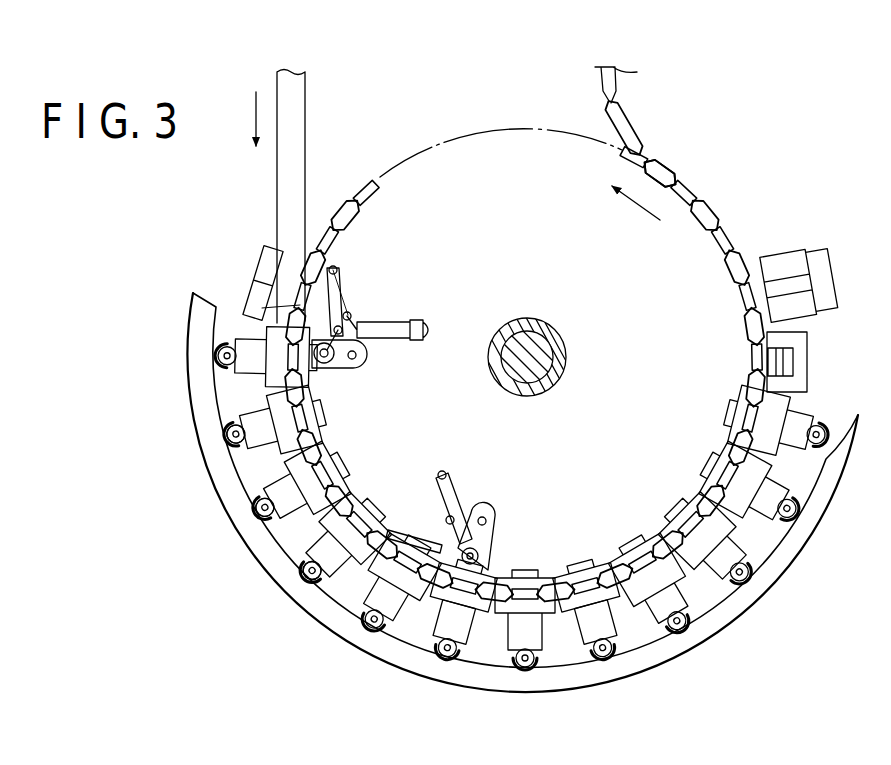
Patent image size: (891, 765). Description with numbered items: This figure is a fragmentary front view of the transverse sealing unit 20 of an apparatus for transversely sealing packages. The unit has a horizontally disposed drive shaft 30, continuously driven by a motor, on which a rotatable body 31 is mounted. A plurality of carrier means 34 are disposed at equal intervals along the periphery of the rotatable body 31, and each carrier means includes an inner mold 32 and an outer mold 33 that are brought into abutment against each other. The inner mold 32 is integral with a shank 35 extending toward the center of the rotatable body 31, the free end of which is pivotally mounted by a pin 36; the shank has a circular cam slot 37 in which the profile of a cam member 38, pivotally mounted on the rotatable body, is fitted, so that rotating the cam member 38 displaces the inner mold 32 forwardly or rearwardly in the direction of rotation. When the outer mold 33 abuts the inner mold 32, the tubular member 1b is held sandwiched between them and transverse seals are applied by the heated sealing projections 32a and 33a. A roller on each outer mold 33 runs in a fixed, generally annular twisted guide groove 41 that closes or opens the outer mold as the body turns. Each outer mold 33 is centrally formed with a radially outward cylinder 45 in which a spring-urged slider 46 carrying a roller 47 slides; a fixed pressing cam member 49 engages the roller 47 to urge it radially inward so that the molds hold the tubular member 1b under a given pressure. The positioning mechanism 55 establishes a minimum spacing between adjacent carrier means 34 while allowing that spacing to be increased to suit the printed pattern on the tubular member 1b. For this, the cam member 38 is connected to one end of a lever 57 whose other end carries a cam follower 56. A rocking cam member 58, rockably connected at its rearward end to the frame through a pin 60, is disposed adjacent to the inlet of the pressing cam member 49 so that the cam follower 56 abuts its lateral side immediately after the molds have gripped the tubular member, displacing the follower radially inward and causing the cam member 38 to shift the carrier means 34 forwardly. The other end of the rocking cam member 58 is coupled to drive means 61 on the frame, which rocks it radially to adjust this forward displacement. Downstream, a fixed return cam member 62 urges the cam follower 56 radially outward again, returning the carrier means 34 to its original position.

The tubular member 1b is at (309, 163).
The transverse sealing unit 20 is at (477, 118).
The drive shaft 30 is at (550, 368).
The rotatable body 31 is at (647, 342).
The inner mold 32 is at (305, 420).
The sealing projection 32a is at (295, 300).
The outer mold 33 is at (490, 605).
The sealing projection 33a is at (825, 265).
The carrier means 34 is at (433, 617).
The shank 35 is at (370, 353).
The pin 36 is at (354, 360).
The cam slot 37 is at (478, 553).
The cam member 38 is at (330, 362).
The twisted guide groove 41 is at (263, 402).
The cylinder 45 is at (265, 478).
The slider 46 is at (240, 435).
The roller 47 is at (330, 575).
The pressing cam member 49 is at (255, 565).
The positioning mechanism 55 is at (385, 371).
The cam follower 56 is at (343, 302).
The lever 57 is at (262, 308).
The rocking cam member 58 is at (350, 313).
The pin 60 is at (343, 270).
The drive means 61 is at (410, 328).
The return cam member 62 is at (472, 498).